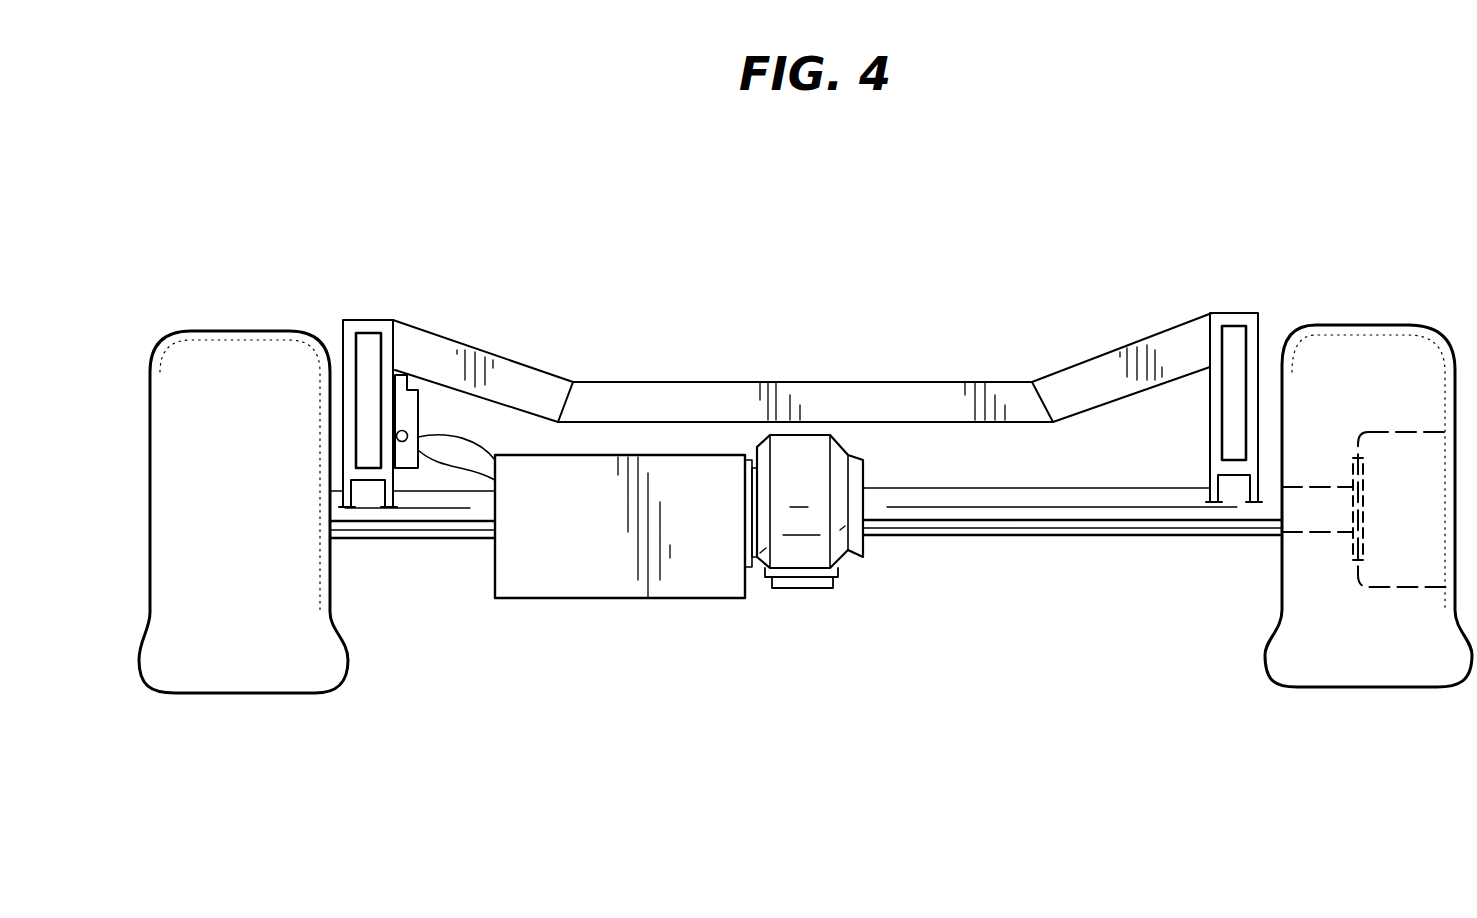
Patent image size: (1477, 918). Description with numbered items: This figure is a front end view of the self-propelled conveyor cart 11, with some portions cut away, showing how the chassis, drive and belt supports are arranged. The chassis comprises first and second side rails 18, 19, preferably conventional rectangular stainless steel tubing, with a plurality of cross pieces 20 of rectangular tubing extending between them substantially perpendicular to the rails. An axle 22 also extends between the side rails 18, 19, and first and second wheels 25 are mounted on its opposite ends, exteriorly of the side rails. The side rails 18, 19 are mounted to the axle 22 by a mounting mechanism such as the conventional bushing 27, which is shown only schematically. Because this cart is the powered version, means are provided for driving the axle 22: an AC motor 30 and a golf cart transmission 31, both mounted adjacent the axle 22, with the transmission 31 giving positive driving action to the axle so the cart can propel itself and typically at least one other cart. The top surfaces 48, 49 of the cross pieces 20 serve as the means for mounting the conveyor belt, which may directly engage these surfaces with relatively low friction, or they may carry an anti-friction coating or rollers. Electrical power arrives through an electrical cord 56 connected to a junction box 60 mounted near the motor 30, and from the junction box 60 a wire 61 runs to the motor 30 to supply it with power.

The conveyor cart 11 is at (1240, 216).
The first side rail 18 is at (370, 345).
The second side rail 19 is at (1250, 338).
The cross piece 20 is at (802, 352).
The axle 22 is at (990, 512).
The wheel 25 is at (208, 360).
The bushing 27 is at (404, 496).
The AC motor 30 is at (607, 578).
The golf cart transmission 31 is at (806, 579).
The top surface 48 is at (818, 382).
The top surface 49 is at (522, 372).
The electrical cord 56 is at (494, 480).
The junction box 60 is at (408, 400).
The wire 61 is at (470, 446).